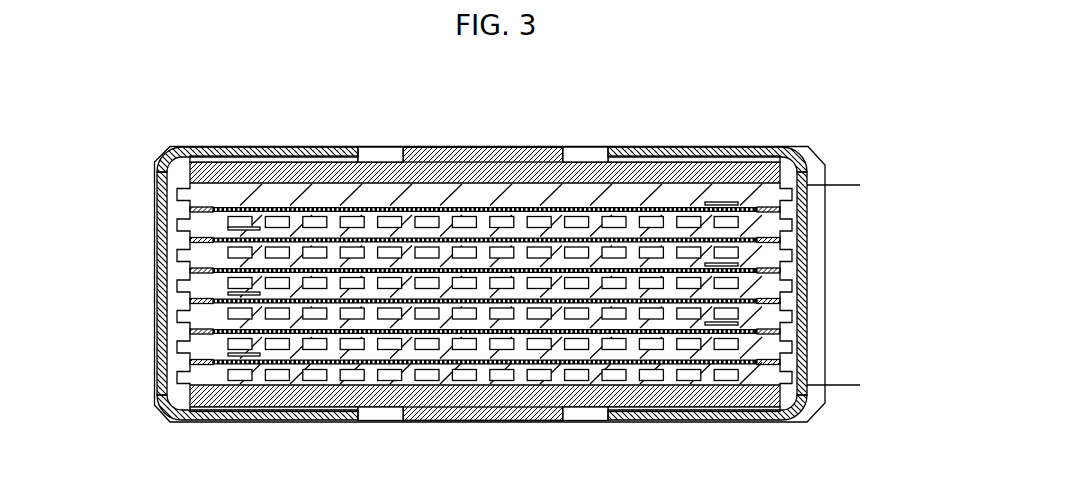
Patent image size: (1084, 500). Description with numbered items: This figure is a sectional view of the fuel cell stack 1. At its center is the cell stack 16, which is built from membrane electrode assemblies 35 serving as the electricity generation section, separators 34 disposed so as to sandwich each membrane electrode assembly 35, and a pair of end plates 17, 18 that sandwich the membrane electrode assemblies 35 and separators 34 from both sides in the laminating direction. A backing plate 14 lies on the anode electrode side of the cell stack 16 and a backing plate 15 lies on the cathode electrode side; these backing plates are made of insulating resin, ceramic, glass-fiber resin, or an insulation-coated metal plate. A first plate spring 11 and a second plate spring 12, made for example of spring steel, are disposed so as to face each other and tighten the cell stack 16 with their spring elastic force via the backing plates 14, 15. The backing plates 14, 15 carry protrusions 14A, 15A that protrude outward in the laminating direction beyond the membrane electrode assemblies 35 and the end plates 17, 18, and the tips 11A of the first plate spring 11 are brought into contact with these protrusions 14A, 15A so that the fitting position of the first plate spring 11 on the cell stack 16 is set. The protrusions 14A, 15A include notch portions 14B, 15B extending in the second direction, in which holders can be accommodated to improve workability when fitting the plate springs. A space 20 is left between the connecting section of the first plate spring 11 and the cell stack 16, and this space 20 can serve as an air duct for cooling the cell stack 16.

The fuel cell stack 1 is at (237, 122).
The first plate spring 11 is at (156, 168).
The tip of first plate spring 11A is at (344, 149).
The second plate spring 12 is at (810, 172).
The backing plate 14 is at (781, 155).
The protrusion 14A is at (610, 137).
The notch portion 14B is at (598, 154).
The backing plate 15 is at (745, 400).
The protrusion 15A is at (610, 435).
The notch portion 15B is at (357, 420).
The cell stack 16 is at (858, 185).
The end plate 17 is at (697, 152).
The end plate 18 is at (293, 382).
The space 20 is at (183, 272).
The separator 34 is at (200, 345).
The membrane electrode assembly 35 is at (223, 327).